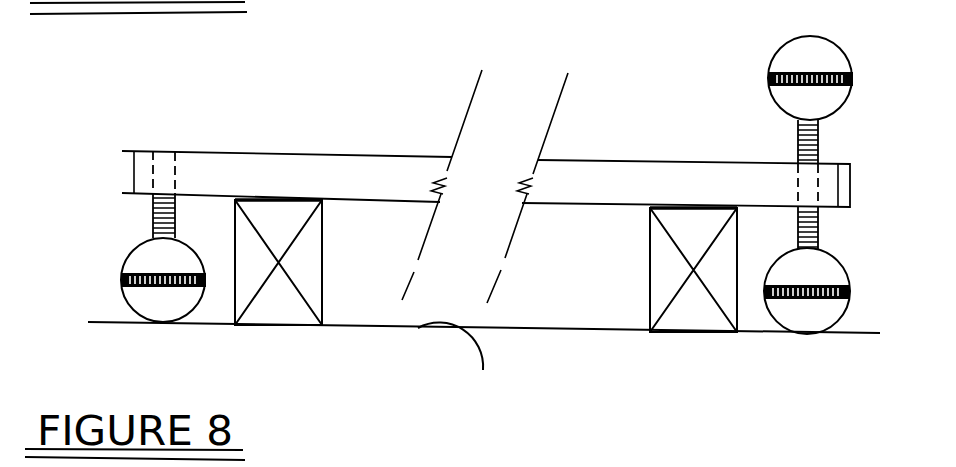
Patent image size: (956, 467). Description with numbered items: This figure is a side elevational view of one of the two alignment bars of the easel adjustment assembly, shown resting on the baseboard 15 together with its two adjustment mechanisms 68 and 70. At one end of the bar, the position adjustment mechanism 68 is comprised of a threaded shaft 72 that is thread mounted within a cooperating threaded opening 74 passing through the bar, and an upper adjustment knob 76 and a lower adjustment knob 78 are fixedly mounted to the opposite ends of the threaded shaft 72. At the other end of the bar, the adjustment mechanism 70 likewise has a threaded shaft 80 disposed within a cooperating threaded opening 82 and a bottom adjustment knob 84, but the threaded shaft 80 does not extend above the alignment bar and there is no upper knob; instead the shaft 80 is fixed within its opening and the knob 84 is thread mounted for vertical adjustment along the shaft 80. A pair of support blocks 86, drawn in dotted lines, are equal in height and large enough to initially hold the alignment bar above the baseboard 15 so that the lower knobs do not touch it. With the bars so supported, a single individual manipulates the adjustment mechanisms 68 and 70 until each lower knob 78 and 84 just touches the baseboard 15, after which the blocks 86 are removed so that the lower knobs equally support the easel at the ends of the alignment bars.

The adjustment mechanism 70 is at (62, 184).
The threaded opening 82 is at (154, 178).
The threaded shaft 80 is at (152, 220).
The bottom adjustment knob 84 is at (125, 258).
The support blocks 86 is at (322, 262).
The baseboard 15 is at (460, 365).
The position adjustment mechanism 68 is at (686, 21).
The upper adjustment knob 76 is at (783, 43).
The threaded shaft 72 is at (798, 143).
The threaded opening 74 is at (797, 187).
The lower adjustment knob 78 is at (768, 313).